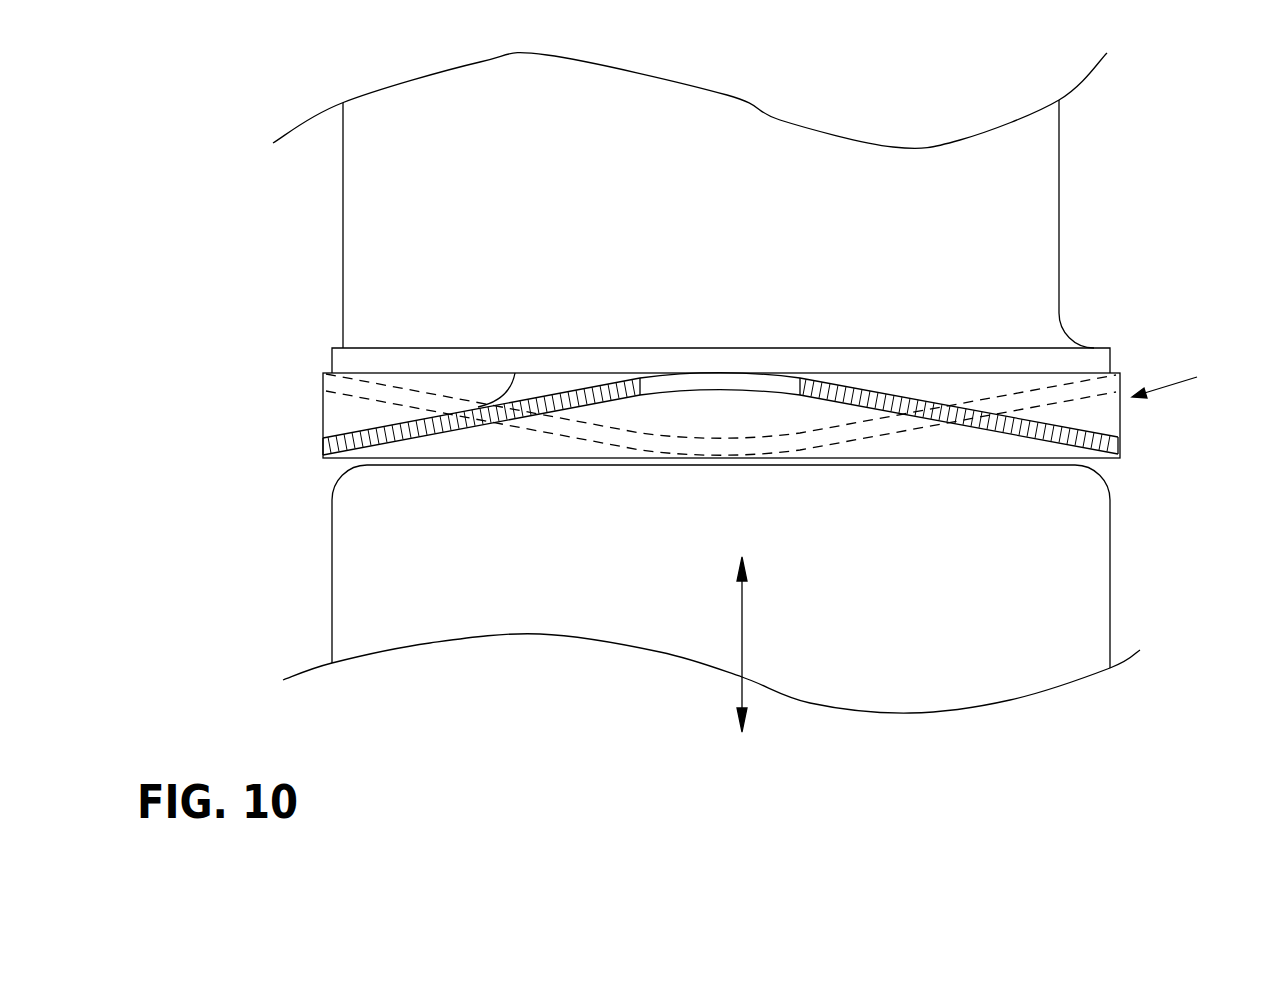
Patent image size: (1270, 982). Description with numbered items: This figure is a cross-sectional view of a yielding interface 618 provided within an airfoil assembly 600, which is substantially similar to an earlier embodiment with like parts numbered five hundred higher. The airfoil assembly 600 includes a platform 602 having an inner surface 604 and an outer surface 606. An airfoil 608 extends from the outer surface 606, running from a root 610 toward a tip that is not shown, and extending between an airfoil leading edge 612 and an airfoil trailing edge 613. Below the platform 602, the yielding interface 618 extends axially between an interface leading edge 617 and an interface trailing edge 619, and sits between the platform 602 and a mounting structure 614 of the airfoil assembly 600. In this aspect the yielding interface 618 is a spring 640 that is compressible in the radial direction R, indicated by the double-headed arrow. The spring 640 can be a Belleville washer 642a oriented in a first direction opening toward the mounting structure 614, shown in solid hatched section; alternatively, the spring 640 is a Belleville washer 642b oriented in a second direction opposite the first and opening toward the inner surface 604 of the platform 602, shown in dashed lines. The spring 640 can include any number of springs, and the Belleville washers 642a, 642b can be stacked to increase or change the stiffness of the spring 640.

The airfoil assembly 600 is at (286, 166).
The platform 602 is at (445, 362).
The inner surface 604 is at (447, 418).
The outer surface 606 is at (993, 347).
The airfoil 608 is at (988, 200).
The root 610 is at (1093, 347).
The airfoil leading edge 612 is at (343, 222).
The airfoil trailing edge 613 is at (1062, 222).
The mounting structure 614 is at (367, 552).
The interface leading edge 617 is at (323, 448).
The yielding interface 618 is at (1190, 378).
The interface trailing edge 619 is at (1120, 427).
The spring 640 is at (1120, 448).
The Belleville washer 642a is at (967, 423).
The Belleville washer 642b is at (690, 455).
The radial direction R is at (742, 645).